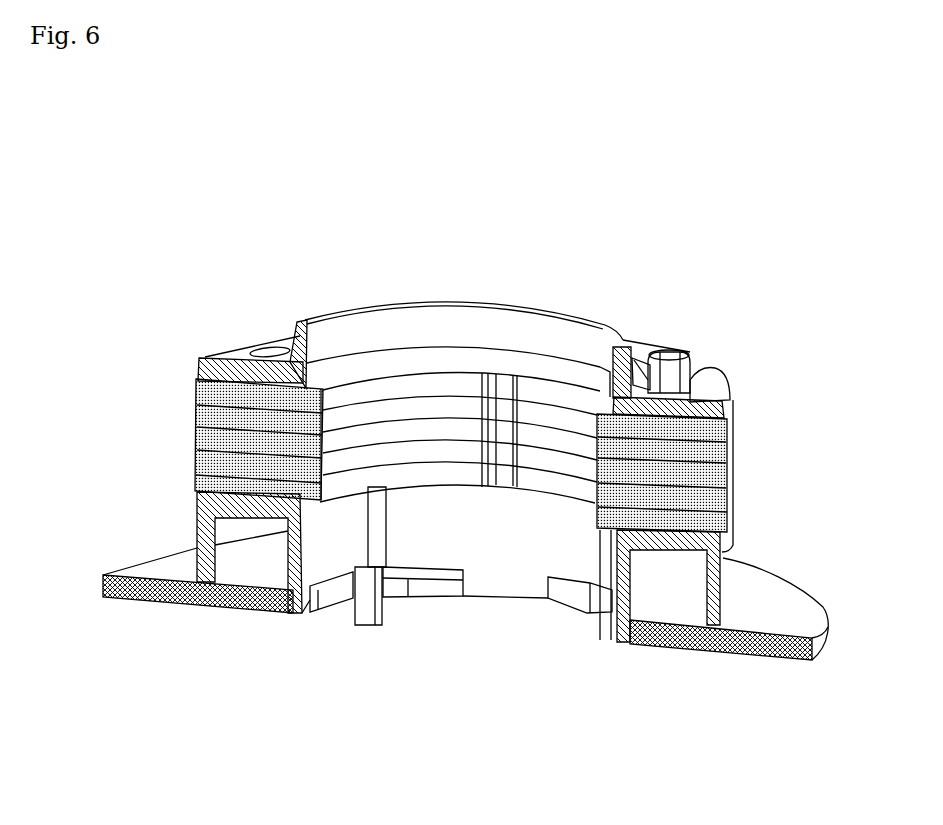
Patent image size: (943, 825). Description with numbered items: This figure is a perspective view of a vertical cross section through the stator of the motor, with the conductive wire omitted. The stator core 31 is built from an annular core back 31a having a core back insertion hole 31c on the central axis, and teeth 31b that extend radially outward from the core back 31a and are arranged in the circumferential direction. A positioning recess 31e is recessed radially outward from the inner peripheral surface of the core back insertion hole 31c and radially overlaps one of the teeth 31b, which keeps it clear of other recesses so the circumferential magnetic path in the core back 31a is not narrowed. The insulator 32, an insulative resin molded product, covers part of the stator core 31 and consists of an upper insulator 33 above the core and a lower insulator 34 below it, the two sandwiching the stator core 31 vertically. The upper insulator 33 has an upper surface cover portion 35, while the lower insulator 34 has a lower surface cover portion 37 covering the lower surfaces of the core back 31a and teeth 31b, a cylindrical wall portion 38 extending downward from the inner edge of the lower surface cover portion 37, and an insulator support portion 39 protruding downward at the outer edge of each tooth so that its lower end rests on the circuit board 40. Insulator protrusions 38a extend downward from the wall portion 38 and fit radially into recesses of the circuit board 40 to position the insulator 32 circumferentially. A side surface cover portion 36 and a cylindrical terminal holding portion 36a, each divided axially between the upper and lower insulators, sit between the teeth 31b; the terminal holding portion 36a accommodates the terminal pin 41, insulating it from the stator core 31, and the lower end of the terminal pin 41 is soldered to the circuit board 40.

The stator core 31 is at (341, 392).
The core back 31a is at (586, 385).
The teeth 31b is at (697, 455).
The core back insertion hole 31c is at (453, 384).
The positioning recess 31e is at (500, 392).
The insulator 32 is at (230, 266).
The upper insulator 33 is at (239, 358).
The lower insulator 34 is at (213, 360).
The upper surface cover portion 35 is at (678, 363).
The side surface cover portion 36 is at (650, 352).
The terminal holding portion 36a is at (375, 535).
The lower surface cover portion 37 is at (672, 550).
The wall portion 38 is at (434, 537).
The insulator protrusion 38a is at (295, 617).
The insulator support portion 39 is at (197, 541).
The circuit board 40 is at (140, 602).
The terminal pin 41 is at (364, 612).